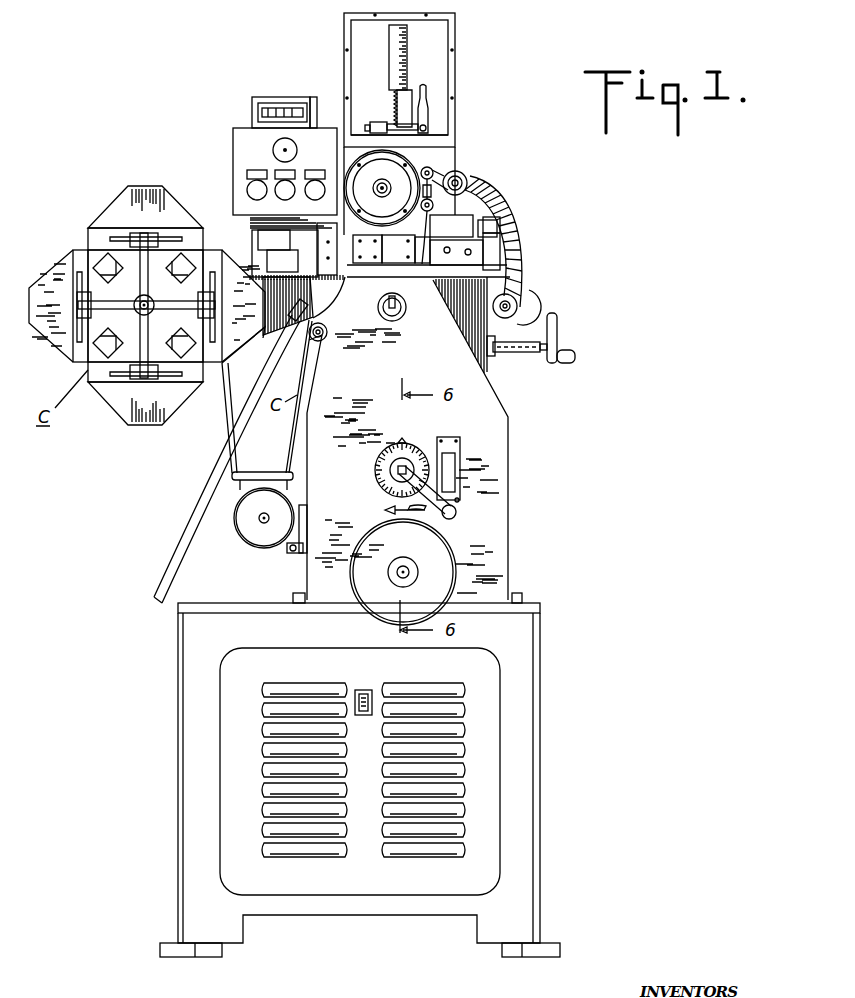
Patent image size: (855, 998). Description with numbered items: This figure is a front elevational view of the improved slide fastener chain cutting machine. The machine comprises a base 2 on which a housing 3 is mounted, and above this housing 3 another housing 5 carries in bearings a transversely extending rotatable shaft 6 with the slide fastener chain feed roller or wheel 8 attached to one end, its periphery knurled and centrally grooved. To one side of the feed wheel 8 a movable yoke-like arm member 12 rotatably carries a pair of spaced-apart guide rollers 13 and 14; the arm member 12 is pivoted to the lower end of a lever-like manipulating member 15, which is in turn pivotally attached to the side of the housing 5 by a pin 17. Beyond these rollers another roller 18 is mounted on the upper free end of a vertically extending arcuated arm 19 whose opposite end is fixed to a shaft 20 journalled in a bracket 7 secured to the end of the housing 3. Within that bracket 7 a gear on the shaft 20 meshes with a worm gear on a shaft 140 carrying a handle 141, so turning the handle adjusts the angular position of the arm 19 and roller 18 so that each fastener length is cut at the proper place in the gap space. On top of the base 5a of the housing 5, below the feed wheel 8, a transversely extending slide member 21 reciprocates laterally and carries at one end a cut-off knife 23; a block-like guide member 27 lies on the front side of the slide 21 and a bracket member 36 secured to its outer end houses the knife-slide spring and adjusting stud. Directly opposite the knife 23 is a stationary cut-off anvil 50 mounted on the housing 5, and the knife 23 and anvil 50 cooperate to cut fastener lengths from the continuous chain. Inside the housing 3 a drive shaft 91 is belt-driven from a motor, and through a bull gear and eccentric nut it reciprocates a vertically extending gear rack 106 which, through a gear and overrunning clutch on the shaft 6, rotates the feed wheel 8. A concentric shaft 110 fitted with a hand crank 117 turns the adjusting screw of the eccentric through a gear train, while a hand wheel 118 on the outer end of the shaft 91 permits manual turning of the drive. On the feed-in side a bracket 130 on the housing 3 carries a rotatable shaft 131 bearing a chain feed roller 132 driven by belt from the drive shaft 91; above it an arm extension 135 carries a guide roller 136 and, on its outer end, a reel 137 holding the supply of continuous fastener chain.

The base 2 is at (530, 747).
The housing 3 is at (500, 453).
The housing 5 is at (443, 110).
The base of the housing 5a is at (373, 270).
The rotatable shaft 6 is at (380, 188).
The bracket 7 is at (530, 303).
The slide fastener chain feed roller 8 is at (432, 170).
The yoke-like arm member 12 is at (463, 180).
The guide roller 13 is at (433, 178).
The guide roller 14 is at (480, 200).
The lever-like manipulating member 15 is at (430, 107).
The pin 17 is at (430, 158).
The roller 18 is at (470, 192).
The arcuated arm 19 is at (495, 213).
The shaft 20 is at (530, 287).
The slide member 21 is at (445, 282).
The cut-off knife 23 is at (430, 265).
The block-like guide member 27 is at (468, 258).
The bracket member 36 is at (498, 227).
The stationary cut-off anvil 50 is at (398, 249).
The shaft 91 is at (413, 572).
The gear rack 106 is at (405, 100).
The shaft 110 is at (400, 470).
The hand crank 117 is at (447, 500).
The hand wheel 118 is at (433, 540).
The bracket 130 is at (296, 553).
The rotatable shaft 131 is at (262, 524).
The chain feed roller 132 is at (247, 522).
The arm extension 135 is at (230, 382).
The guide roller 136 is at (323, 343).
The reel 137 is at (123, 270).
The shaft 140 is at (540, 352).
The handle 141 is at (560, 327).